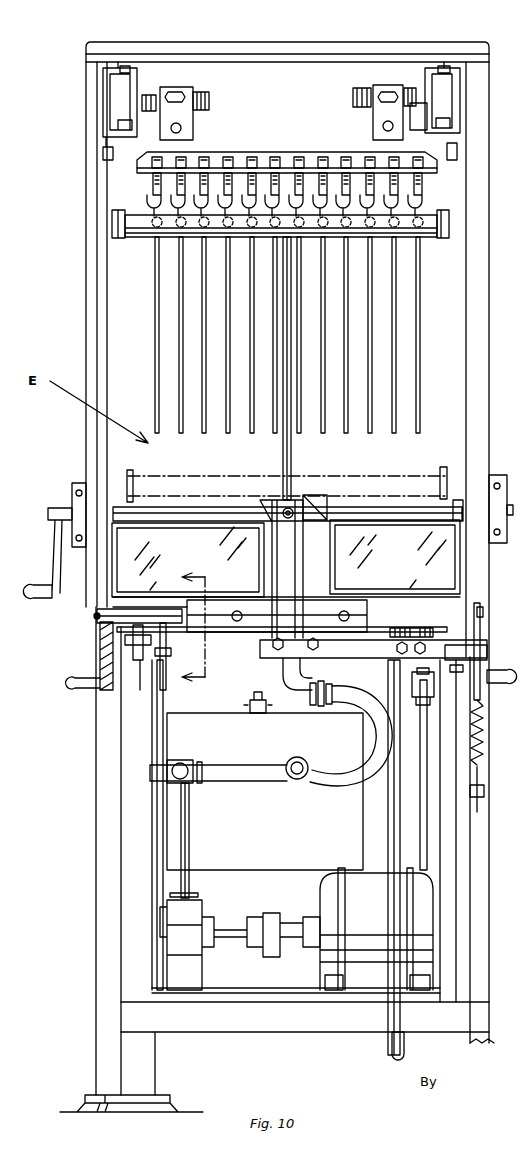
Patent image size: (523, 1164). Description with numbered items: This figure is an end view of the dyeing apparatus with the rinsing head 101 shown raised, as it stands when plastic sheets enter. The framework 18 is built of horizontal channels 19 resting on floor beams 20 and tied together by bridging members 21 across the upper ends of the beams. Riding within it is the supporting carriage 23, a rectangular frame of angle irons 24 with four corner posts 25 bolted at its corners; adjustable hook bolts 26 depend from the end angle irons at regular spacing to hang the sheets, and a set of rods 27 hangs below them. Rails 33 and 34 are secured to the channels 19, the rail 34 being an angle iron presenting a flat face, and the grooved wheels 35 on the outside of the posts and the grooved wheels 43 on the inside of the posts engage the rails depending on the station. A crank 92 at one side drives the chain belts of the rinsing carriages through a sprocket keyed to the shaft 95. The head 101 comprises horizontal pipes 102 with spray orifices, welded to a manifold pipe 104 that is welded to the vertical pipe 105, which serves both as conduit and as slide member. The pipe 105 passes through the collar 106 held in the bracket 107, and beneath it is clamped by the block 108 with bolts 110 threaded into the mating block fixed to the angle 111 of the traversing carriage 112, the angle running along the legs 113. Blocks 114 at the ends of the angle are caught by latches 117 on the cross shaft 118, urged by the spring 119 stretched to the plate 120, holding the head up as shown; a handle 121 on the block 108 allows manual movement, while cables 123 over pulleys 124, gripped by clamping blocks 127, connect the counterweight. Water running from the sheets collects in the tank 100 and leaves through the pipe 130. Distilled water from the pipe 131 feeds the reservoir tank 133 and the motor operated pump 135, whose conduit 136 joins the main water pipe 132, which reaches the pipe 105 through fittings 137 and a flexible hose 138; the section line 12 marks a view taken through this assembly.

The section line 12 is at (201, 571).
The framework 18 is at (78, 268).
The horizontal channels 19 is at (137, 94).
The floor beams 20 is at (88, 307).
The bridging members 21 is at (210, 53).
The supporting carriage 23 is at (248, 146).
The angle irons 24 is at (272, 152).
The corner posts 25 is at (178, 124).
The adjustable hook bolts 26 is at (152, 189).
The rod 27 is at (160, 300).
The rail 33 is at (416, 116).
The rail 34 is at (144, 113).
The grooved wheels 35 is at (150, 96).
The grooved wheels 43 is at (200, 97).
The crank 92 is at (36, 584).
The shaft 95 is at (162, 512).
The tank 100 is at (452, 570).
The rinsing head 101 is at (139, 245).
The pipes 102 is at (432, 210).
The manifold pipe 104 is at (418, 235).
The vertically extending pipe 105 is at (283, 452).
The block or collar 106 is at (291, 507).
The bracket 107 is at (313, 519).
The block 108 is at (310, 658).
The bolts 110 is at (278, 640).
The angle 111 is at (395, 648).
The traversing carriage 112 is at (367, 655).
The legs 113 is at (132, 882).
The blocks 114 is at (463, 651).
The latches 117 is at (105, 650).
The cross shaft 118 is at (94, 616).
The spring 119 is at (471, 730).
The plate 120 is at (473, 794).
The handle 121 is at (272, 499).
The cables 123 is at (164, 740).
The pulleys 124 is at (155, 657).
The clamping blocks 127 is at (437, 695).
The pipe 130 is at (397, 815).
The pipe 131 is at (256, 699).
The pipe 132 is at (243, 768).
The reservoir tank 133 is at (219, 736).
The motor operated pump 135 is at (186, 918).
The conduit 136 is at (188, 835).
The fittings 137 is at (295, 694).
The hose 138 is at (321, 778).